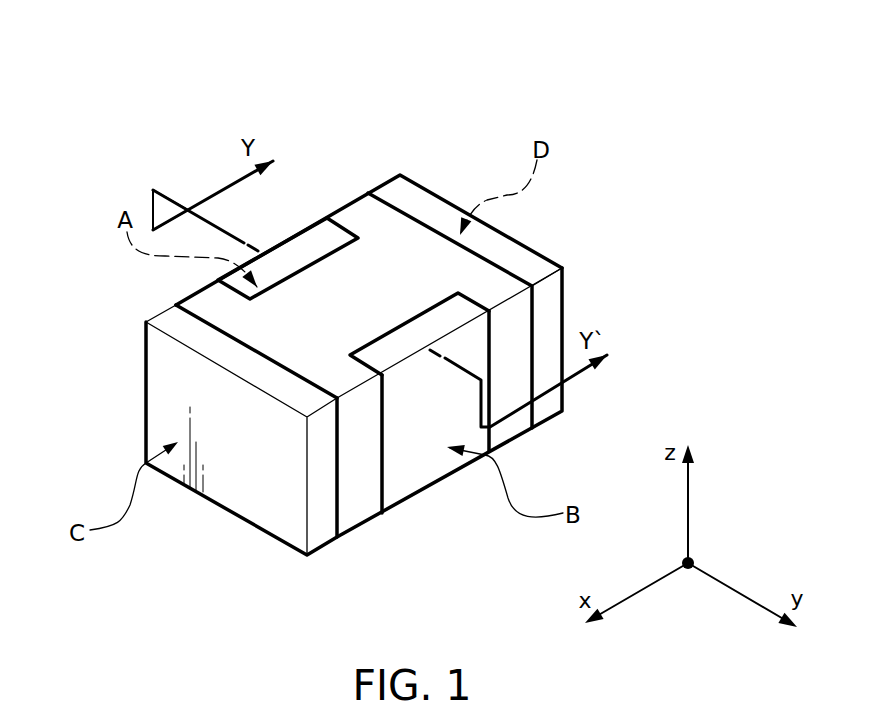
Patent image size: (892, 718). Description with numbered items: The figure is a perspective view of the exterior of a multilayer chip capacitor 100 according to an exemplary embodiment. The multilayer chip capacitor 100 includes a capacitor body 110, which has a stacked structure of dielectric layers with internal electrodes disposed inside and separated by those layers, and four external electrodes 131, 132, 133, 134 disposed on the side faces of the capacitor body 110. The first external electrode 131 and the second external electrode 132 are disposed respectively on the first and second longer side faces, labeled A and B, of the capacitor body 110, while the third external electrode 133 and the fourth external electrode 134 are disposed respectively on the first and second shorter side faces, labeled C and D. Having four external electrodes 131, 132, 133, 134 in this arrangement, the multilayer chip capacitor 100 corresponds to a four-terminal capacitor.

The multilayer chip capacitor 100 is at (358, 307).
The capacitor body 110 is at (208, 306).
The first external electrode 131 is at (300, 243).
The second external electrode 132 is at (397, 493).
The third external electrode 133 is at (252, 514).
The fourth external electrode 134 is at (541, 263).